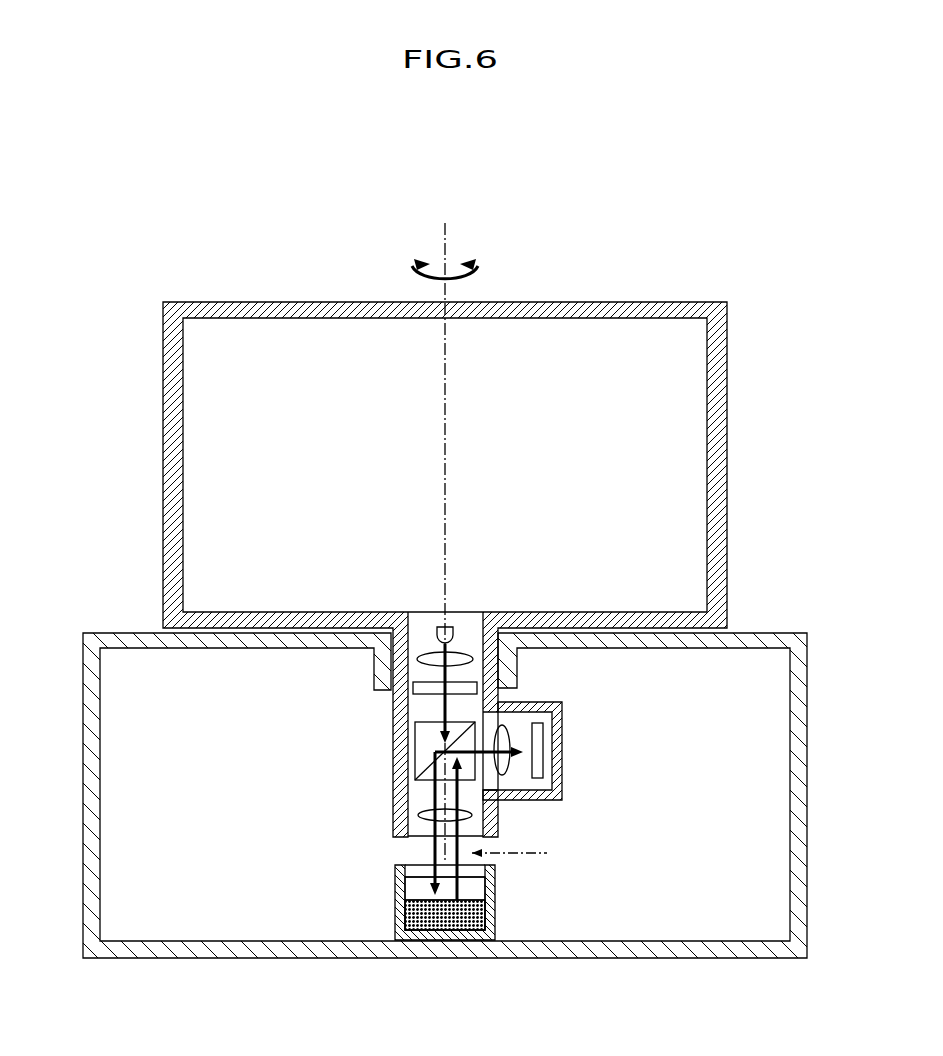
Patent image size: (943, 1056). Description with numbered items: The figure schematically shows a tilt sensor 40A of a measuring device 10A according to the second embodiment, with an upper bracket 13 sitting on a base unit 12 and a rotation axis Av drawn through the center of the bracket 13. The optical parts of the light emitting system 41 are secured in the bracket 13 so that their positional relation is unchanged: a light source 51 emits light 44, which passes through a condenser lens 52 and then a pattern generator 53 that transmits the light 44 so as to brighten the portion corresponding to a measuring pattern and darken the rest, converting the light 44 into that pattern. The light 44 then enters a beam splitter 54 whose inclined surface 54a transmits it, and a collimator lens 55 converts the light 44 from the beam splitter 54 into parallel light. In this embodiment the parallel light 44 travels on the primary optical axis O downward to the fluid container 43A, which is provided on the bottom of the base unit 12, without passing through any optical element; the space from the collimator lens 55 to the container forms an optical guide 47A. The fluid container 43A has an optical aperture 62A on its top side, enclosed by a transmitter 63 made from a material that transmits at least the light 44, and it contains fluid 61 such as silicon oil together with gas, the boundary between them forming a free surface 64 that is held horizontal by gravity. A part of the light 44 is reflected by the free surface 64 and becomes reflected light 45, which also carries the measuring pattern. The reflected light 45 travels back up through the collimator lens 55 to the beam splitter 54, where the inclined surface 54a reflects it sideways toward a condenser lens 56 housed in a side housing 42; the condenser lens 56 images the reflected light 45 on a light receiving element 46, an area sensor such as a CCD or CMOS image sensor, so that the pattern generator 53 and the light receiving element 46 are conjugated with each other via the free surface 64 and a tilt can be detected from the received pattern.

The measuring device 10A is at (705, 213).
The rotation axis Av is at (447, 240).
The bracket 13 is at (162, 465).
The base unit 12 is at (118, 630).
The tilt sensor 40A is at (705, 675).
The light emitting system 41 is at (430, 708).
The detector housing 42 is at (513, 800).
The fluid container 43A is at (393, 902).
The light 44 is at (445, 673).
The reflected light 45 is at (497, 770).
The light receiving element 46 is at (538, 722).
The optical guide 47A is at (478, 863).
The light source 51 is at (442, 627).
The condenser lens 52 is at (468, 655).
The pattern generator 53 is at (413, 690).
The beam splitter 54 is at (415, 760).
The inclined surface 54a is at (425, 771).
The collimator lens 55 is at (418, 815).
The condenser lens 56 is at (503, 728).
The fluid 61 is at (492, 922).
The optical aperture 62A is at (426, 870).
The transmitter 63 is at (472, 873).
The free surface 64 is at (470, 880).
The primary optical axis O is at (518, 854).